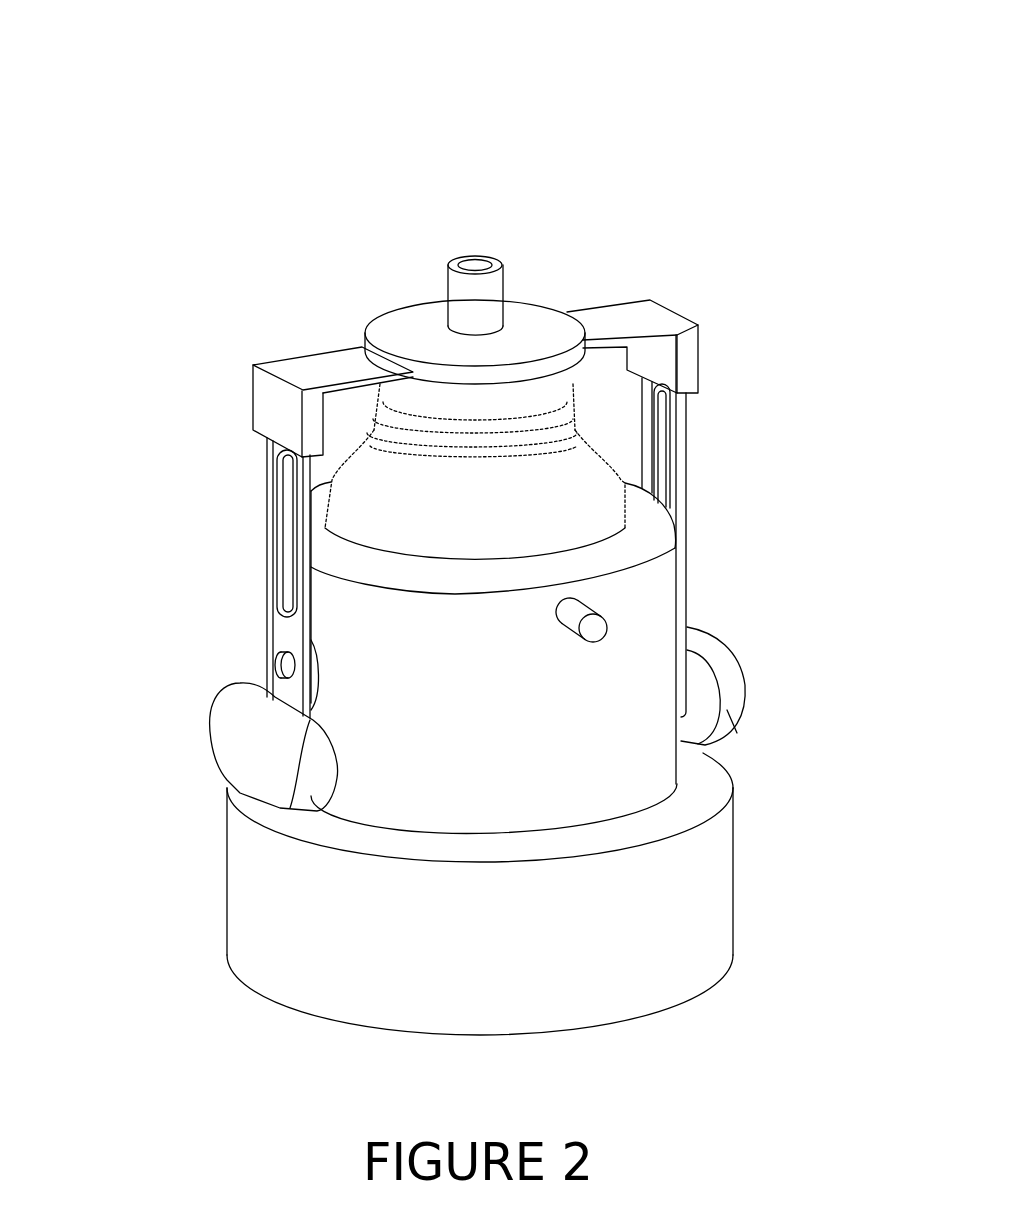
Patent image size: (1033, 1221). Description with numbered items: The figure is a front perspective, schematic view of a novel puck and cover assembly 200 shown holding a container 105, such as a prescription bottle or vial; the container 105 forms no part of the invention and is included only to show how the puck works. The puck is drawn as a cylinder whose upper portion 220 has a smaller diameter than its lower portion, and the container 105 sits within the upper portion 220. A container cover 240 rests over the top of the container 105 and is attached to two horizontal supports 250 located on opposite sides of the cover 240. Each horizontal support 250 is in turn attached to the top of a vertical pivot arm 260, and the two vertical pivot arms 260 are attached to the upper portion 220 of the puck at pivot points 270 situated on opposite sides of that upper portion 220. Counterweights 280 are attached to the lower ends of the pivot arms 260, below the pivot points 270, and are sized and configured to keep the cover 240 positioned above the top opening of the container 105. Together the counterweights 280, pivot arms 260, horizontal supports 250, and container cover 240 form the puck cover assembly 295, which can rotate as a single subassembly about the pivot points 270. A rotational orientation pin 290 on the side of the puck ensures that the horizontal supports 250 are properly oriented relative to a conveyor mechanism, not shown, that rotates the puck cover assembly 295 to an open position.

The puck and cover assembly 200 is at (815, 112).
The container 105 is at (567, 498).
The upper portion 220 is at (765, 520).
The container cover 240 is at (407, 323).
The horizontal supports 250 is at (348, 366).
The vertical pivot arms 260 is at (273, 627).
The pivot points 270 is at (268, 655).
The counterweights 280 is at (233, 717).
The rotational orientation pin 290 is at (575, 622).
The puck cover assembly 295 is at (240, 113).